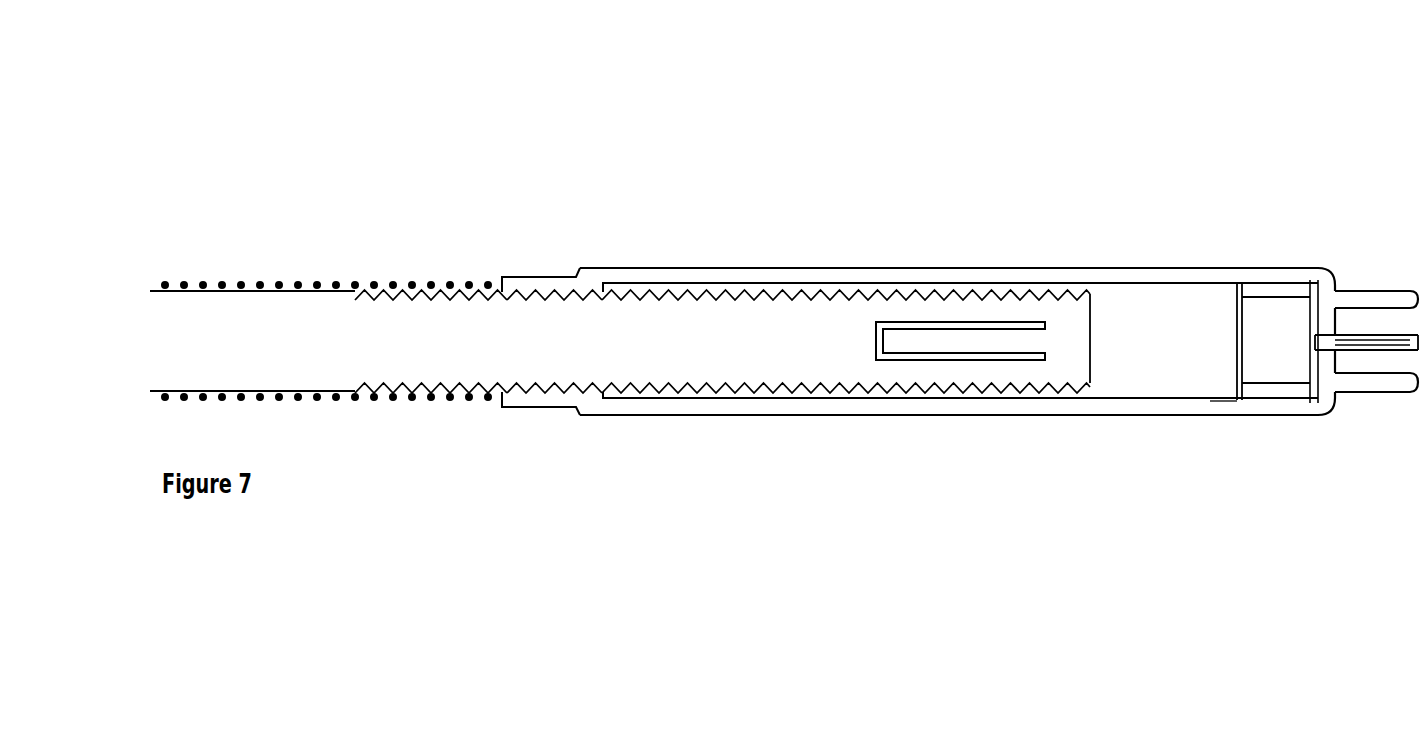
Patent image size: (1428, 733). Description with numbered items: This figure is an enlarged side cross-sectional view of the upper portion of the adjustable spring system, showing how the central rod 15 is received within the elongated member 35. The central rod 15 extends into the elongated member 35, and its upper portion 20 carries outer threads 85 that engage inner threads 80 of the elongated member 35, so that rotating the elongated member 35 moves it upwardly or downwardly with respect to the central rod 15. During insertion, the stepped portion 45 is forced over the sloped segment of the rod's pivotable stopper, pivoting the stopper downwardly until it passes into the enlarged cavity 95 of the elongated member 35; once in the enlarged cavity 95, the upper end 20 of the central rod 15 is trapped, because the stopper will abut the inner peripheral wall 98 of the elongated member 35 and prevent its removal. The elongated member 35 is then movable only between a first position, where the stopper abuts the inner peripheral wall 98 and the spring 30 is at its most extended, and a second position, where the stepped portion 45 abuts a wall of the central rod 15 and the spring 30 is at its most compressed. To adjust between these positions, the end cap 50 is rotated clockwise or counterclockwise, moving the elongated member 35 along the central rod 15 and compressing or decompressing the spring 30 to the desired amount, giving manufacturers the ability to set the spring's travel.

The central rod 15 is at (275, 322).
The spring 30 is at (398, 292).
The stepped portion 45 is at (520, 290).
The inner peripheral wall 98 is at (606, 283).
The upper portion 20 is at (1070, 320).
The enlarged cavity 95 is at (1139, 306).
The end cap 50 is at (1372, 291).
The inner threads 80 is at (546, 391).
The outer threads 85 is at (935, 388).
The elongated member 35 is at (1223, 410).